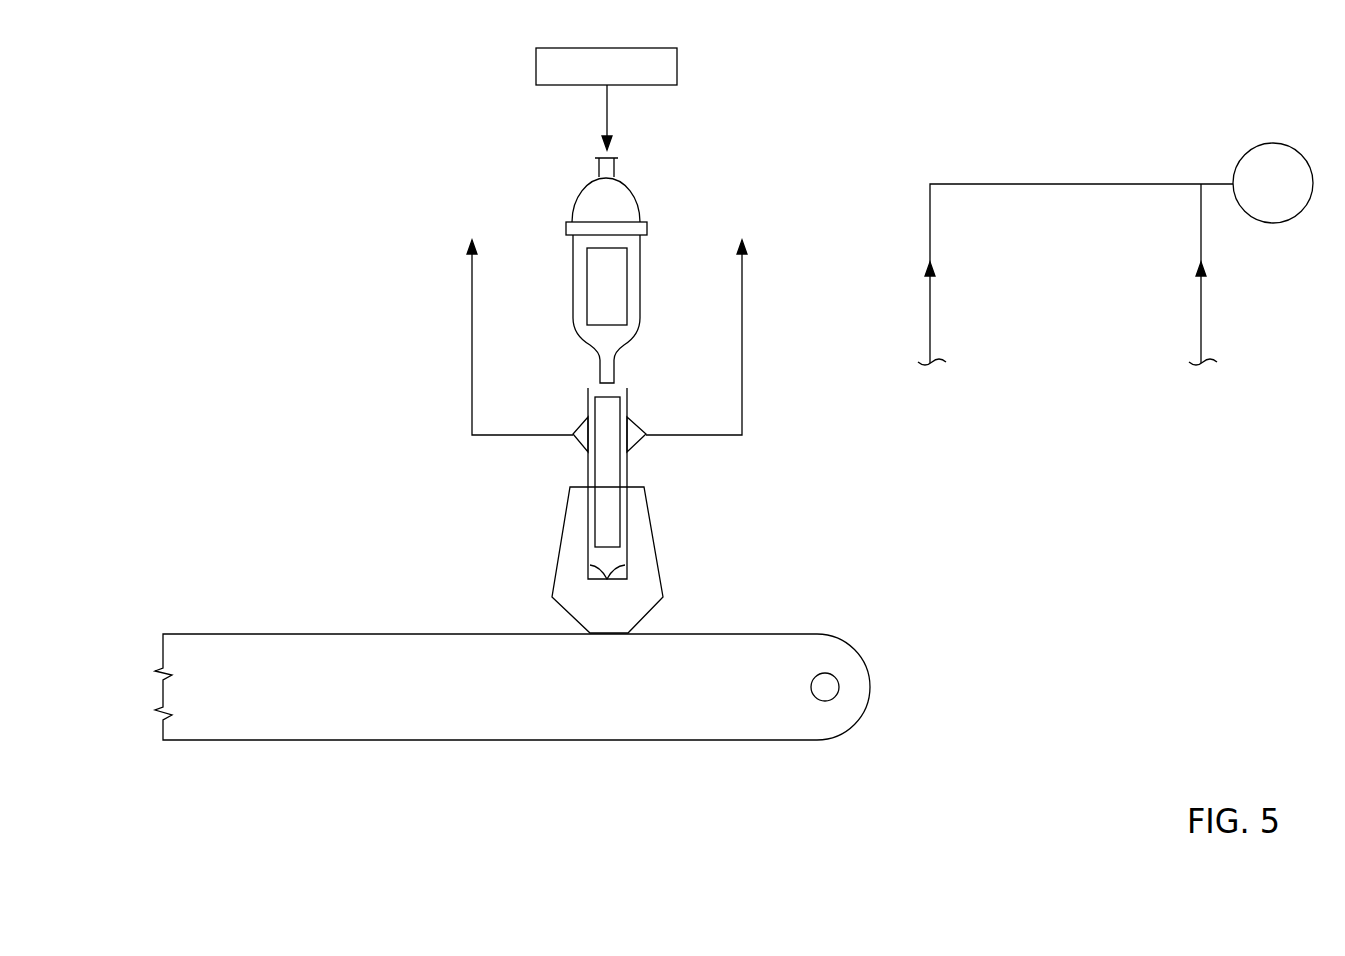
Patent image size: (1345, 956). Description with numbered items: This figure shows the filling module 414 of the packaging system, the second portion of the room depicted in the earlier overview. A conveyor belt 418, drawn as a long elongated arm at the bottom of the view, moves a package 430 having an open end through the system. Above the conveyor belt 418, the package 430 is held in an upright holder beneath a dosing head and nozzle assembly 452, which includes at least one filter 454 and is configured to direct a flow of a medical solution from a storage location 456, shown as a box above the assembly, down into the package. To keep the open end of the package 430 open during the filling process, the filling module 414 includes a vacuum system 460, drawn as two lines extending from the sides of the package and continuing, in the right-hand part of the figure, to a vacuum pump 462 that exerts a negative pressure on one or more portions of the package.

The filling module 414 is at (275, 126).
The storage location 456 is at (665, 62).
The dosing head and nozzle assembly 452 is at (637, 203).
The filter 454 is at (597, 270).
The package 430 is at (588, 468).
The vacuum system 460 is at (742, 365).
The vacuum pump 462 is at (1247, 150).
The conveyor belt 418 is at (645, 741).